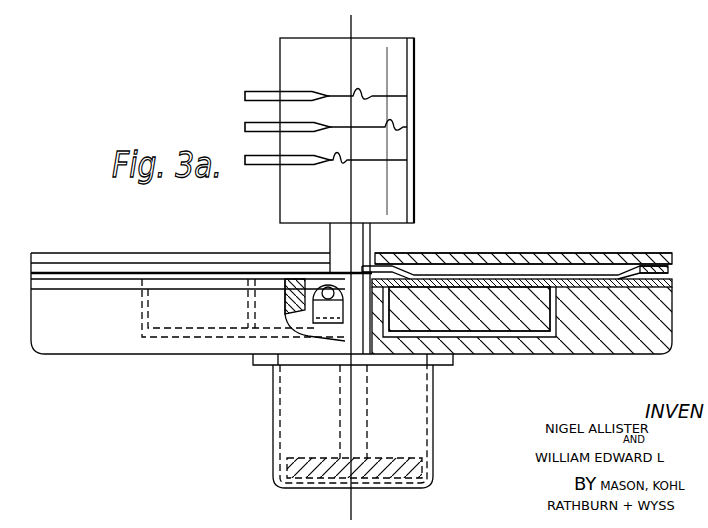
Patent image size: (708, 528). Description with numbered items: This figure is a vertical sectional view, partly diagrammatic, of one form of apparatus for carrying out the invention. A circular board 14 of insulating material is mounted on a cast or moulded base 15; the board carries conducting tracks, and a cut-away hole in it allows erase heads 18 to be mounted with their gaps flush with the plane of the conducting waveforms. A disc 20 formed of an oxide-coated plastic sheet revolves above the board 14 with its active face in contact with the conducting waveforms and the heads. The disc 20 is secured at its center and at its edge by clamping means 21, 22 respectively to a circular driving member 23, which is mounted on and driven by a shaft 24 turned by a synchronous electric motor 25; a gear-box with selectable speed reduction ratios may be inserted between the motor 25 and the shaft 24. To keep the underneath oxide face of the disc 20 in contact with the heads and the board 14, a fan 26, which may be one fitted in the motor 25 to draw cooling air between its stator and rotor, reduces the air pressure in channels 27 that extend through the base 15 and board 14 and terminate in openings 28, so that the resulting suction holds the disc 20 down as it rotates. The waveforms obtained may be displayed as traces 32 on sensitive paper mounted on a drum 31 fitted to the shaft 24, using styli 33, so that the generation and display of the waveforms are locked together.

The circular board 14 is at (672, 290).
The base 15 is at (658, 345).
The erase heads 18 is at (317, 303).
The disc 20 is at (485, 264).
The clamping means 21 is at (390, 268).
The clamping means 22 is at (670, 271).
The circular driving member 23 is at (563, 258).
The shaft 24 is at (372, 236).
The synchronous electric motor 25 is at (433, 410).
The fan 26 is at (421, 467).
The channels 27 is at (520, 336).
The openings 28 is at (554, 285).
The drum 31 is at (398, 62).
The traces 32 is at (405, 158).
The styli 33 is at (247, 158).